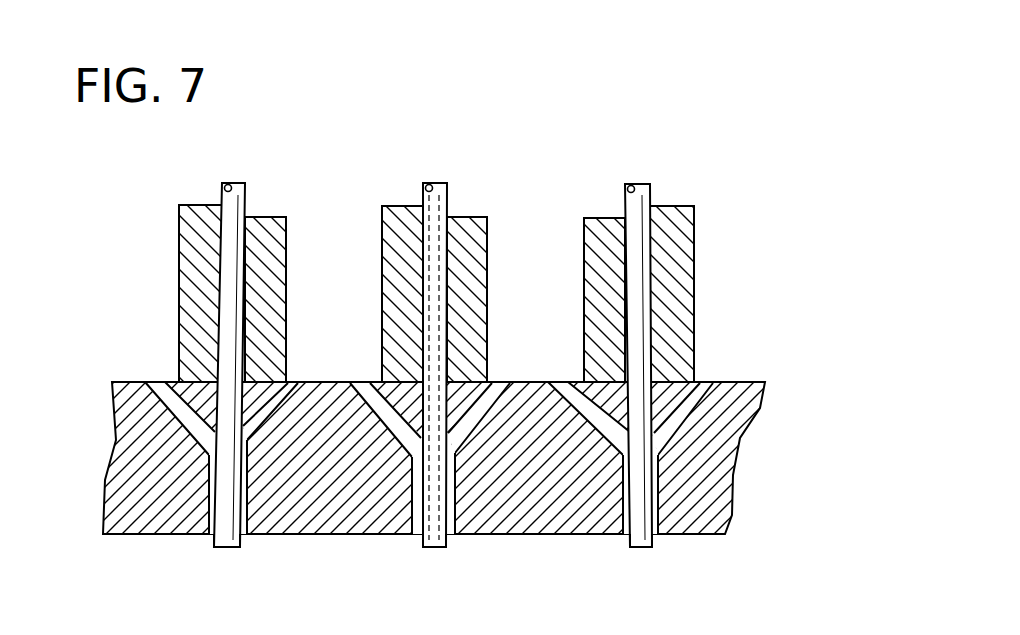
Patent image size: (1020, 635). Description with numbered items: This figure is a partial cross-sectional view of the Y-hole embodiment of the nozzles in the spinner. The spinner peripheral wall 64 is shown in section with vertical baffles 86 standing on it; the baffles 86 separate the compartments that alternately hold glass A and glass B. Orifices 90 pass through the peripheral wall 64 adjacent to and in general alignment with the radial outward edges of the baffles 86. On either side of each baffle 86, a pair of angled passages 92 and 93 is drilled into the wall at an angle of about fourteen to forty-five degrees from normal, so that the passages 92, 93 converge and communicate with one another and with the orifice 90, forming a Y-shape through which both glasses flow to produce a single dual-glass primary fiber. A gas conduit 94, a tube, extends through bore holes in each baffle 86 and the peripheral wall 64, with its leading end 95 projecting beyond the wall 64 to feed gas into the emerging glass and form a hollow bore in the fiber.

The spinner peripheral wall 64 is at (692, 515).
The vertical baffles 86 is at (382, 250).
The orifices 90 is at (208, 537).
The passage 92 is at (160, 385).
The passage 93 is at (305, 383).
The gas conduit 94 is at (248, 191).
The leading end 95 is at (222, 549).